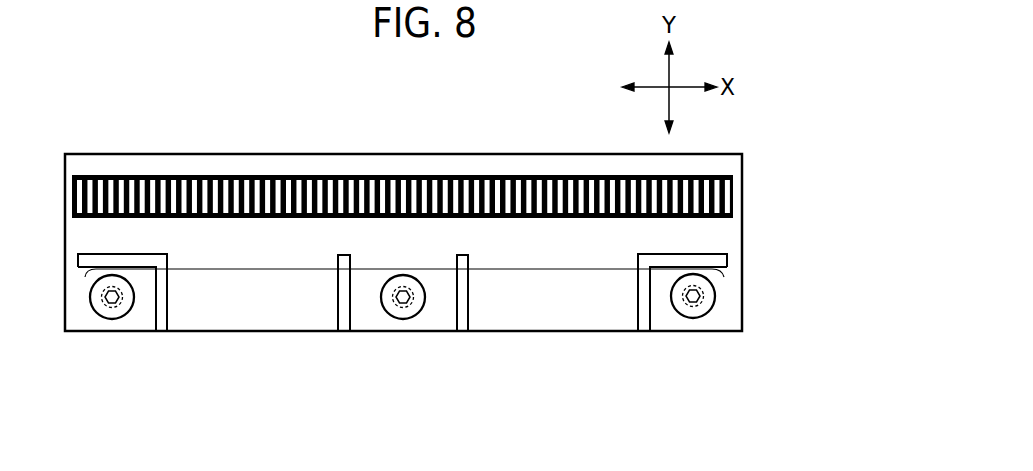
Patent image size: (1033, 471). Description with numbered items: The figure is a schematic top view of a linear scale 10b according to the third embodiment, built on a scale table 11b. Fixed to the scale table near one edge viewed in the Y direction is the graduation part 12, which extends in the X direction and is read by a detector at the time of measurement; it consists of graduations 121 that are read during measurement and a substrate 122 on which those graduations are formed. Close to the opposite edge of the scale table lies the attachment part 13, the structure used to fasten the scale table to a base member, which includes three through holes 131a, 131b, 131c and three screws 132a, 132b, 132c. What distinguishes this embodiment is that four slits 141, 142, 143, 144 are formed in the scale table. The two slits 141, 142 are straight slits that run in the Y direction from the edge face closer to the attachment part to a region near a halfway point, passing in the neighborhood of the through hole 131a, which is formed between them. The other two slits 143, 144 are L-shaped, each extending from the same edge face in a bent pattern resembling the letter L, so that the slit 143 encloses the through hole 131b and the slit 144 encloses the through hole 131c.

The linear scale 10b is at (364, 139).
The scale table 11b is at (515, 154).
The graduation part 12 is at (818, 145).
The graduations 121 is at (733, 200).
The substrate 122 is at (735, 182).
The attachment part 13 is at (408, 261).
The through hole 131a is at (410, 306).
The through hole 131b is at (116, 306).
The through hole 131c is at (700, 306).
The screw 132a is at (394, 313).
The screw 132b is at (100, 312).
The screw 132c is at (686, 311).
The slit 141 is at (344, 300).
The slit 142 is at (467, 300).
The slit 143 is at (164, 300).
The slit 144 is at (643, 300).